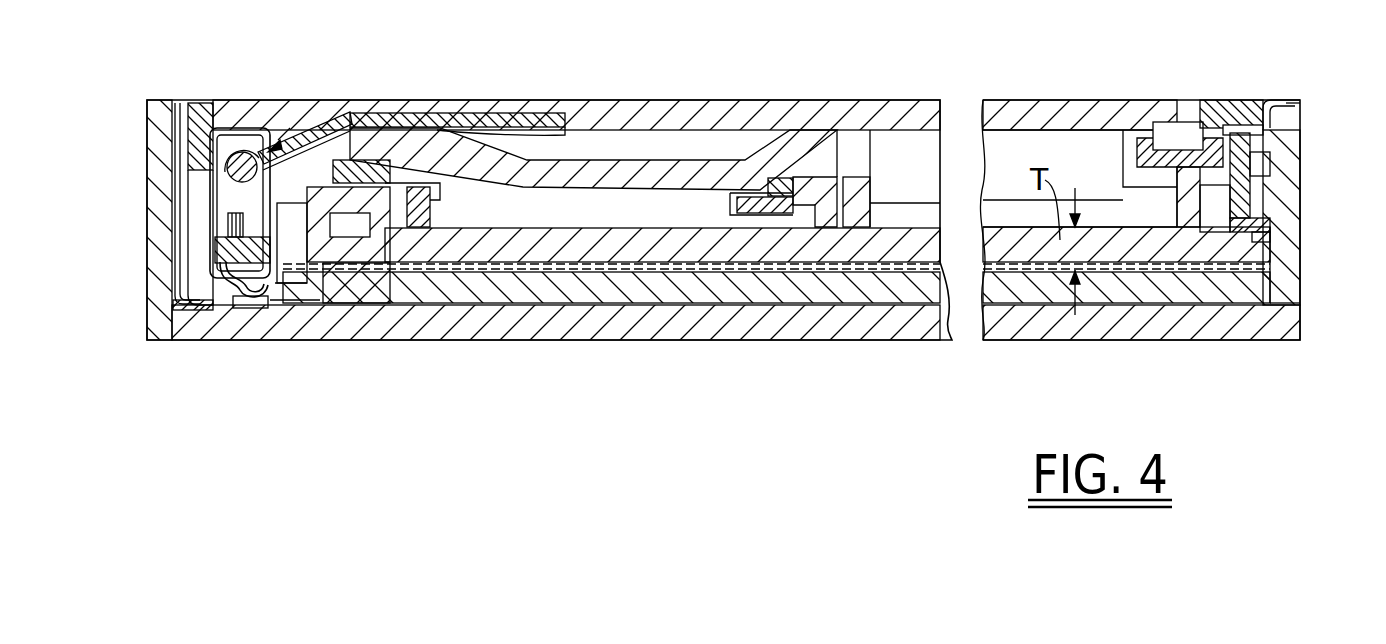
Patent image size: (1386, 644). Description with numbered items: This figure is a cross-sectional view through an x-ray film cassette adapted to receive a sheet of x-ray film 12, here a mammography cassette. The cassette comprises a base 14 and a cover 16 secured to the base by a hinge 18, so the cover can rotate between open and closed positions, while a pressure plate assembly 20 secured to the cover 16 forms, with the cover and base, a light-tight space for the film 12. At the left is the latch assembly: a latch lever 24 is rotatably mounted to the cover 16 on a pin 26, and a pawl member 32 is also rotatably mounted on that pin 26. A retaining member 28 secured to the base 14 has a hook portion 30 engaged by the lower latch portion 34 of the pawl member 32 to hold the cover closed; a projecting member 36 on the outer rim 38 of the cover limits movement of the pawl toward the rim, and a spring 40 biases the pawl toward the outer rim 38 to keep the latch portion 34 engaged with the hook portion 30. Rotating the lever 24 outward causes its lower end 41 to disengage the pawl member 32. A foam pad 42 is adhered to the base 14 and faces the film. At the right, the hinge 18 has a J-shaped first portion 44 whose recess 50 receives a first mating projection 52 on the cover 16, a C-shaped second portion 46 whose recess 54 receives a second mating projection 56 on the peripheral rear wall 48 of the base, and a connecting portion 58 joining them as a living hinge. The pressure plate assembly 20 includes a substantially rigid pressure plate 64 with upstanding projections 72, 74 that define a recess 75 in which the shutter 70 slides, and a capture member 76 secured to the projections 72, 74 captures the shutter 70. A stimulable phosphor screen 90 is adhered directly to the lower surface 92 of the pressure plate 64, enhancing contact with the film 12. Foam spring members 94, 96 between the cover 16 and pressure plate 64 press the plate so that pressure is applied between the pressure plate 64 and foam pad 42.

The sheet of x-ray film 12 is at (372, 322).
The base 14 is at (858, 322).
The cover 16 is at (900, 103).
The hinge 18 is at (1262, 103).
The pressure plate assembly 20 is at (293, 125).
The latch lever 24 is at (512, 112).
The pin 26 is at (246, 148).
The retaining member 28 is at (205, 322).
The hook portion 30 is at (202, 286).
The pawl member 32 is at (280, 322).
The lower latch portion 34 is at (234, 322).
The projecting member 36 is at (198, 243).
The outer rim 38 is at (178, 184).
The spring 40 is at (305, 128).
The lower end 41 is at (188, 218).
The foam pad 42 is at (716, 290).
The first portion 44 is at (1200, 115).
The second portion 46 is at (1302, 150).
The peripheral rear wall 48 is at (1283, 250).
The recess 50 is at (1158, 122).
The first mating projection 52 is at (1170, 112).
The recess 54 is at (1280, 196).
The second mating projection 56 is at (1278, 222).
The connecting portion 58 is at (1300, 104).
The pressure plate 64 is at (540, 240).
The shutter 70 is at (740, 206).
The upstanding projection 72 is at (436, 212).
The upstanding projection 74 is at (392, 160).
The recess 75 is at (621, 213).
The capture member 76 is at (797, 152).
The stimulable phosphor screen 90 is at (990, 266).
The lower surface 92 is at (375, 325).
The spring member 94 is at (385, 158).
The spring member 96 is at (1285, 258).